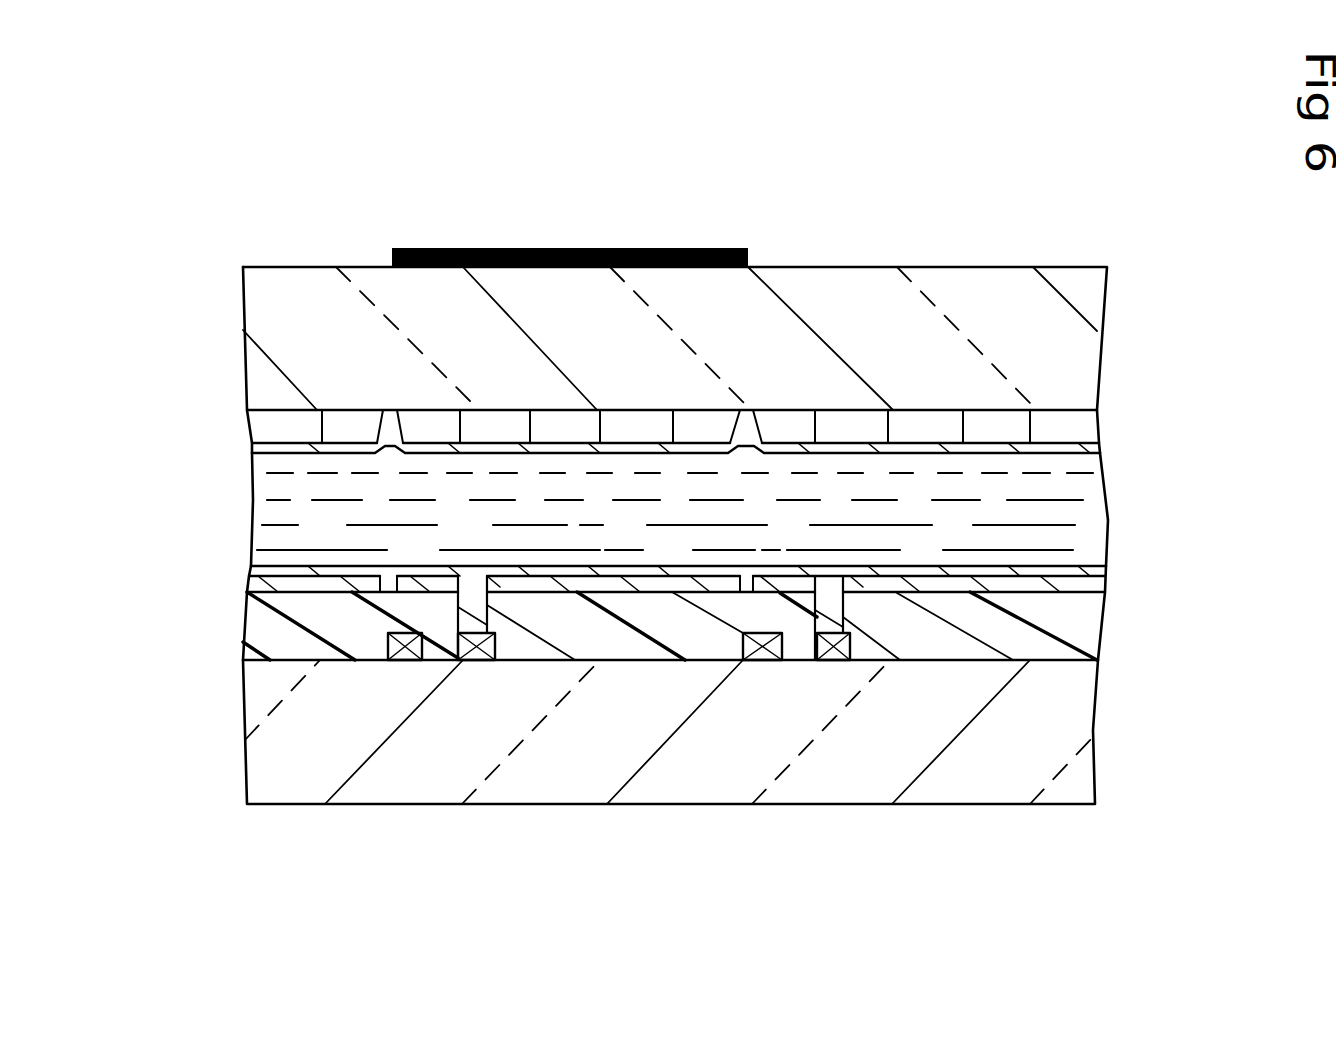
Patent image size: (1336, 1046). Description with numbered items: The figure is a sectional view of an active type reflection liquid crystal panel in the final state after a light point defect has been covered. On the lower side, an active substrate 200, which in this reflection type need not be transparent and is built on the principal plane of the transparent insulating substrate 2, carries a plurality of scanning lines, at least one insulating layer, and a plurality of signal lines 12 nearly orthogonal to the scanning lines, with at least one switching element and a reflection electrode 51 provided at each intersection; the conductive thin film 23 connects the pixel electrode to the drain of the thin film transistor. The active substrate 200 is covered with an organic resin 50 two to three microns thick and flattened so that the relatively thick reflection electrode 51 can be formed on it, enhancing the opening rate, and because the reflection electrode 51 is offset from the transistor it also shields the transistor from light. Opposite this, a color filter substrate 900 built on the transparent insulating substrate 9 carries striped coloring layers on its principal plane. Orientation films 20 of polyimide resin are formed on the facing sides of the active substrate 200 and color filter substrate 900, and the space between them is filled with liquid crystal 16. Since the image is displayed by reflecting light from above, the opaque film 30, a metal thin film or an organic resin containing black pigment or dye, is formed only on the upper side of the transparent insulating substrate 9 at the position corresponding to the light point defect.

The first transparent insulating substrate 2 is at (718, 738).
The transparent insulating substrate 9 is at (1023, 323).
The signal lines 12 is at (403, 660).
The liquid crystal 16 is at (1090, 510).
The orientation films 20 is at (1100, 452).
The conductive thin film 23 is at (478, 660).
The opaque film 30 is at (685, 247).
The organic resin 50 is at (903, 627).
The reflection electrode 51 is at (1098, 592).
The active substrate 200 is at (1107, 690).
The color filter substrate 900 is at (1108, 375).